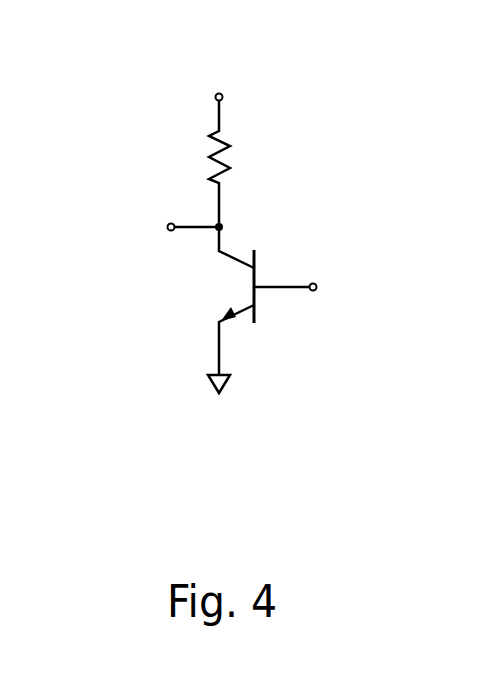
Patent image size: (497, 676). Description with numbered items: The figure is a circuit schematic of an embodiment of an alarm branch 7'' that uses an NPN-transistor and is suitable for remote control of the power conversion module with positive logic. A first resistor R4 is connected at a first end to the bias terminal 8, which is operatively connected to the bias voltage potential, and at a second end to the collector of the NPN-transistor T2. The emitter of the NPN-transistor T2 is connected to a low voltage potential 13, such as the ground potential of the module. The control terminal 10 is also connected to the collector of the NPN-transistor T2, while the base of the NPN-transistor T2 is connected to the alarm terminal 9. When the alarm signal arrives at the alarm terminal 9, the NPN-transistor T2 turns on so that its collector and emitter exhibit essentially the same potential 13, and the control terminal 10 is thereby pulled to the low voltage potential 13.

The alarm branch 7'' is at (232, 209).
The bias terminal 8 is at (214, 97).
The first resistor R4 is at (238, 176).
The control terminal 10 is at (165, 226).
The NPN-transistor T2 is at (233, 299).
The alarm terminal 9 is at (317, 288).
The low voltage potential 13 is at (207, 385).